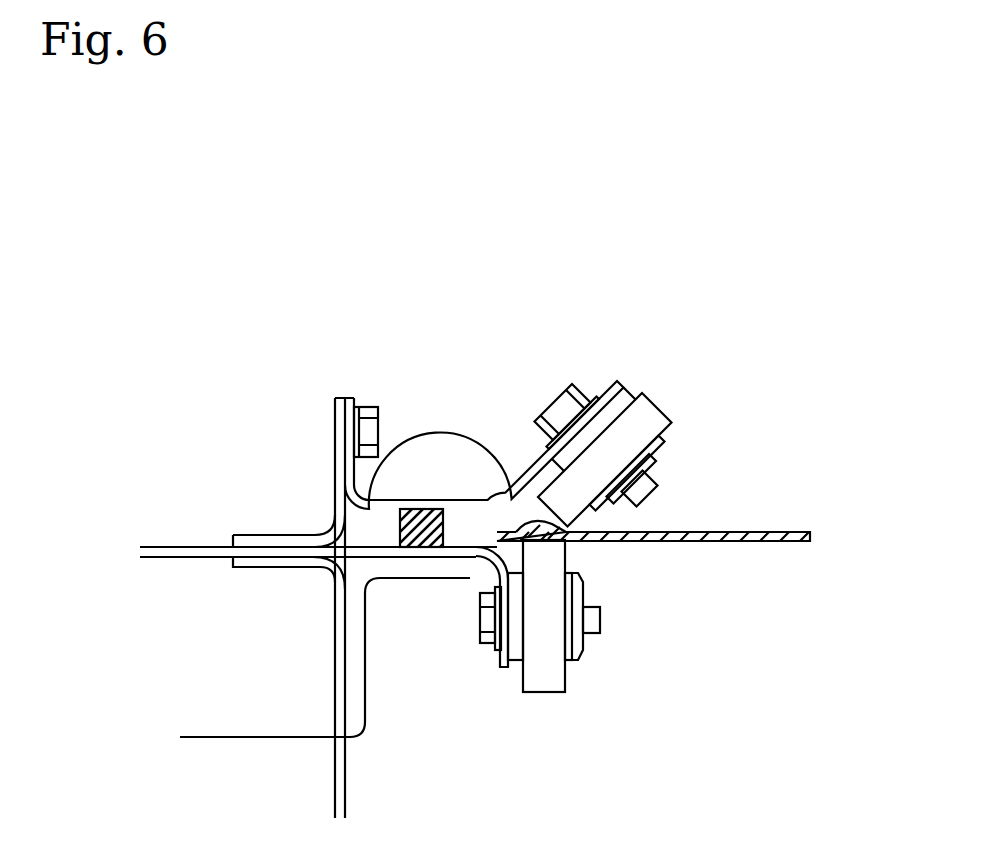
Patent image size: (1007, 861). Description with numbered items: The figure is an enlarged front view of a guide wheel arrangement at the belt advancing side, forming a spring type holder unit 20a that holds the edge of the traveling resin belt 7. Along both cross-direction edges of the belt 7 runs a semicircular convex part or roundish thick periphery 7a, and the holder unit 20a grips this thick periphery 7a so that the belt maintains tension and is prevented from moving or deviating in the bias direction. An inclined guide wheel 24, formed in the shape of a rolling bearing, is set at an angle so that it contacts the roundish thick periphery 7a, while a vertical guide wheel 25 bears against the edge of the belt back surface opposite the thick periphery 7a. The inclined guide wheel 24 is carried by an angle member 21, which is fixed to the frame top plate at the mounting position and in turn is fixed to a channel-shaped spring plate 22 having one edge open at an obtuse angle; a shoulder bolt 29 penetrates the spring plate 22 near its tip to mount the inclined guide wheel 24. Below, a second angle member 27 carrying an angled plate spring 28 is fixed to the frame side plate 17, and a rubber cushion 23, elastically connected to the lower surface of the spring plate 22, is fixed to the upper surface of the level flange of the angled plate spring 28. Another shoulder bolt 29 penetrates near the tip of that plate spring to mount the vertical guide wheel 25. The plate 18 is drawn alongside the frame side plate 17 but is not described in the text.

The resin belt 7 is at (760, 532).
The roundish thick periphery 7a is at (570, 545).
The frame side plate 17 is at (334, 797).
The cross plate 18 is at (185, 545).
The spring type holder unit 20a is at (512, 352).
The angle member 21 is at (283, 535).
The spring plate 22 is at (478, 498).
The rubber cushion 23 is at (421, 509).
The guide wheel 24 is at (650, 412).
The vertical guide wheel 25 is at (547, 693).
The angle member 27 is at (368, 704).
The angled plate spring 28 is at (483, 560).
The shoulder bolt 29 is at (557, 393).